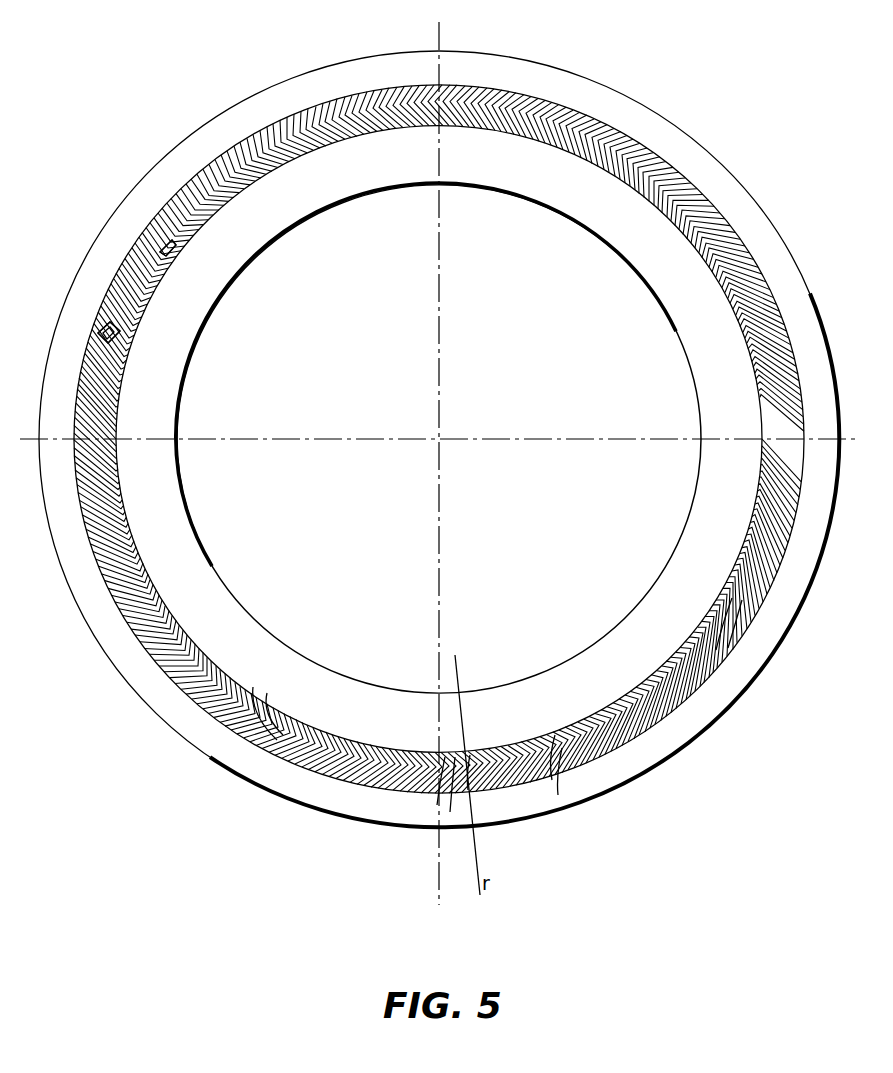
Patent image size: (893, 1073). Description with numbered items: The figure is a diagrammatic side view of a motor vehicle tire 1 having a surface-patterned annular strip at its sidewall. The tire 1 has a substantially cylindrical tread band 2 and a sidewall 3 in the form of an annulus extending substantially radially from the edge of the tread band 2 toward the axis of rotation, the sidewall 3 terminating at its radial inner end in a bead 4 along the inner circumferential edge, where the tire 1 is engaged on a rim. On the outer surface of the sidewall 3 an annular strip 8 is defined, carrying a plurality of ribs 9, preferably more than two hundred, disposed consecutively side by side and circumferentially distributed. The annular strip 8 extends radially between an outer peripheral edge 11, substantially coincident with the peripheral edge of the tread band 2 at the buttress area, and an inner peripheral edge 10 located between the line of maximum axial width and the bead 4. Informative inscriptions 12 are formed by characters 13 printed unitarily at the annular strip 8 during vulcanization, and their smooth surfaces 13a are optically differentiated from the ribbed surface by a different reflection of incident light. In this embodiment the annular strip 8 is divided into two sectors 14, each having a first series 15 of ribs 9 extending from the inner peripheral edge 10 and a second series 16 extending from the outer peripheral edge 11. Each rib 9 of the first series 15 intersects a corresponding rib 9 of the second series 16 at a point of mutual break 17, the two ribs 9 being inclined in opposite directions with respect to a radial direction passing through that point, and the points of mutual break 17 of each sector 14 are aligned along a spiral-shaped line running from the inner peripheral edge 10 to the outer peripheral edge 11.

The motor vehicle tire 1 is at (439, 439).
The tread band 2 is at (439, 439).
The sidewall 3 is at (306, 702).
The bead 4 is at (438, 438).
The annular strip 8 is at (439, 439).
The ribs 9 is at (738, 625).
The inner peripheral edge 10 is at (439, 439).
The outer peripheral edge 11 is at (439, 439).
The informative inscriptions 12 is at (130, 243).
The characters 13 is at (157, 248).
The smooth surfaces 13a is at (165, 244).
The sectors 14 is at (335, 96).
The first series of ribs 15 is at (272, 720).
The second series of ribs 16 is at (451, 805).
The point of mutual break 17 is at (472, 780).